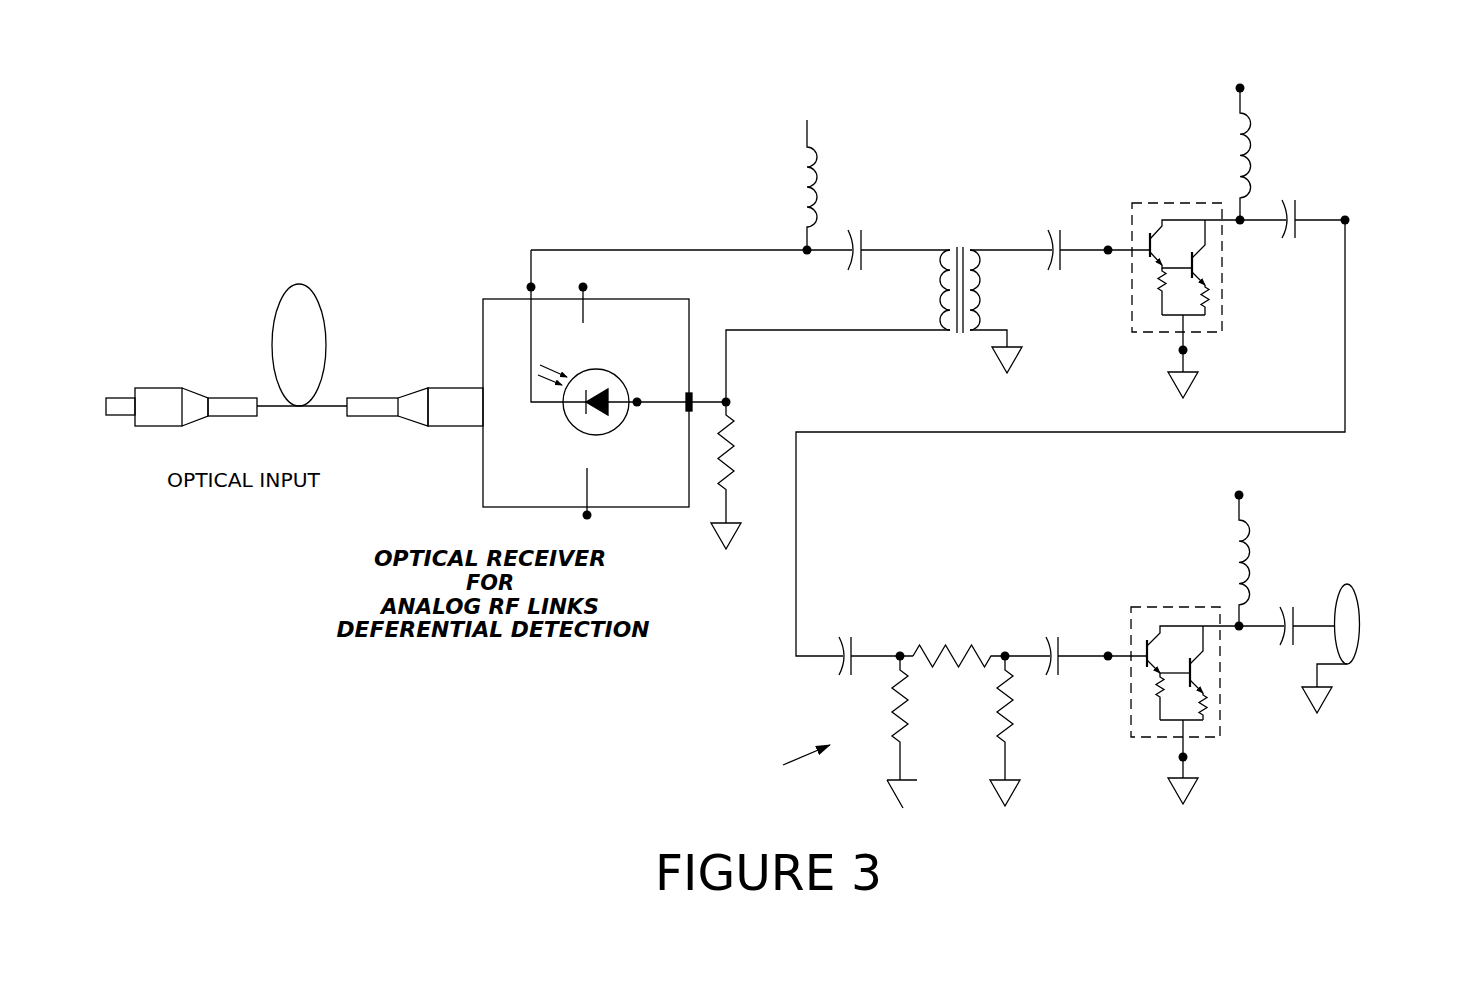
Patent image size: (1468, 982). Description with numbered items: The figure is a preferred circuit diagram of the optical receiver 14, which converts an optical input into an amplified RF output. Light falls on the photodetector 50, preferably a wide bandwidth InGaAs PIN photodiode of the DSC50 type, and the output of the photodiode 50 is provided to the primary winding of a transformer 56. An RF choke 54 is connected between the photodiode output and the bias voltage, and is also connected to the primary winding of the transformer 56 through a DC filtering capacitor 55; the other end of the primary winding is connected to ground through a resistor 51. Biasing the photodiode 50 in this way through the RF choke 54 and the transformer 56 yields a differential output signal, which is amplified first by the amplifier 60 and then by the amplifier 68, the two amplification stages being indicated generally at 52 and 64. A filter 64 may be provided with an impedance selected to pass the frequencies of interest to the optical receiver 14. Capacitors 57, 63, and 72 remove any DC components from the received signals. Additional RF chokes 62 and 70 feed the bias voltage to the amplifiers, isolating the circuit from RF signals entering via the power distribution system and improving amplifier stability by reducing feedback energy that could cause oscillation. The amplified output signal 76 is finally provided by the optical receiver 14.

The optical receiver 14 is at (963, 82).
The photodetector 50 is at (480, 323).
The resistor 51 is at (745, 425).
The first amplifier stage 52 is at (1028, 155).
The RF choke 54 is at (823, 180).
The DC filtering capacitor 55 is at (848, 262).
The transformer 56 is at (972, 208).
The capacitor 57 is at (1047, 265).
The amplifier 60 is at (1228, 310).
The RF choke 62 is at (1255, 152).
The capacitor 63 is at (1305, 197).
The filter 64 is at (998, 577).
The amplifier 68 is at (1228, 733).
The RF choke 70 is at (1257, 538).
The capacitor 72 is at (1280, 642).
The output signal 76 is at (1370, 625).